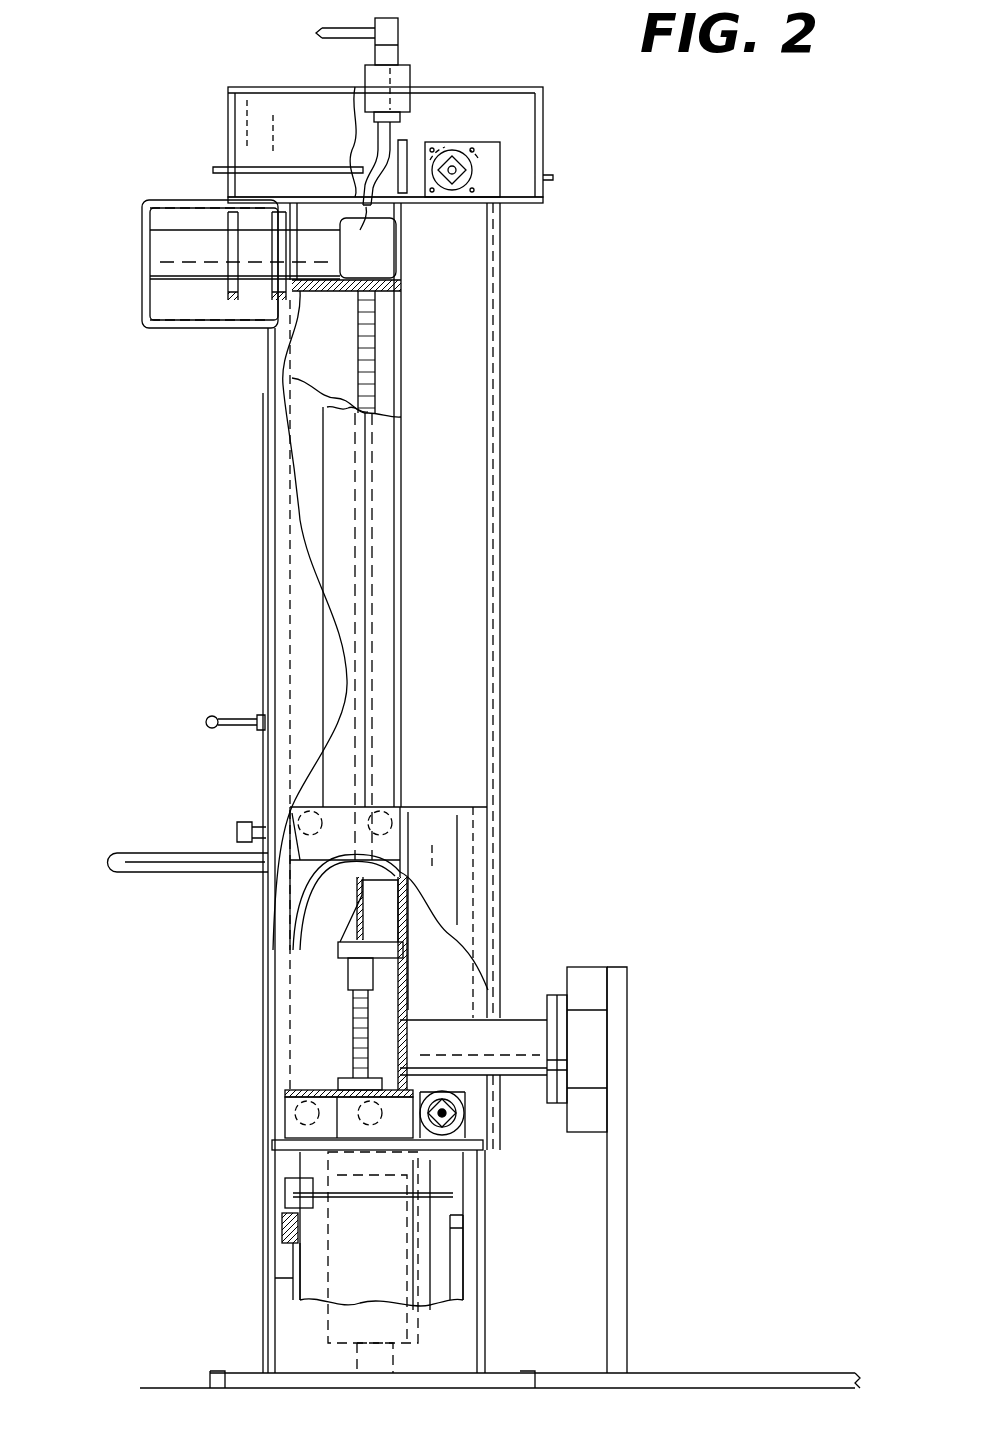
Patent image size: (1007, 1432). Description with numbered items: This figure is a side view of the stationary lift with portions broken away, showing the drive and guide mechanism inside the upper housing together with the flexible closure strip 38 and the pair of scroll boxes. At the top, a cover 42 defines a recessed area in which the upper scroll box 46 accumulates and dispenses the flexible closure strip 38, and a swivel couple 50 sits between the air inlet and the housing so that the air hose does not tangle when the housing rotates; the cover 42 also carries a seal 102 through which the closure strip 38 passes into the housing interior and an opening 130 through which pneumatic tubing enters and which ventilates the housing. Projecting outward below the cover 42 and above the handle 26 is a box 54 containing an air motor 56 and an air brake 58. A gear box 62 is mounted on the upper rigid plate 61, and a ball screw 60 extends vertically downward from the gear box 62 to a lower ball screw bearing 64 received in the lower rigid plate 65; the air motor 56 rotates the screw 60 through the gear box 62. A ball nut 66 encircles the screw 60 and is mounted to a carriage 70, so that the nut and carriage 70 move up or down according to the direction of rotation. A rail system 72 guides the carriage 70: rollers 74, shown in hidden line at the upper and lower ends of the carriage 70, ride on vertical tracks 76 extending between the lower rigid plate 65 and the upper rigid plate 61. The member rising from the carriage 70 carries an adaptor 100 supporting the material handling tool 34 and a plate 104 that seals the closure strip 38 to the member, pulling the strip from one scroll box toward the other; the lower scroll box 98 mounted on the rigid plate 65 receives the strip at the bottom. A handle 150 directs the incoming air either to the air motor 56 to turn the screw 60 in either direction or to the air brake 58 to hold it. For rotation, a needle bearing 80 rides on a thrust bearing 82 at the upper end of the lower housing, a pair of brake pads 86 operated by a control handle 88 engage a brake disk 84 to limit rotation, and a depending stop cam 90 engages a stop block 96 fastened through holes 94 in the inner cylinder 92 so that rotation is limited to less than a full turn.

The handle 26 is at (150, 867).
The material handling tool 34 is at (620, 1010).
The flexible closure strip 38 is at (495, 467).
The cover 42 is at (525, 205).
The upper scroll box 46 is at (497, 150).
The swivel couple 50 is at (408, 72).
The box 54 is at (152, 203).
The air motor 56 is at (155, 262).
The air brake 58 is at (253, 298).
The ball screw 60 is at (376, 363).
The upper rigid plate 61 is at (287, 366).
The gear box 62 is at (357, 230).
The lower ball screw bearing 64 is at (343, 1083).
The lower rigid plate 65 is at (300, 1100).
The ball nut 66 is at (345, 958).
The carriage 70 is at (468, 825).
The rail system 72 is at (297, 893).
The rollers 74 is at (293, 813).
The vertical tracks 76 is at (333, 505).
The needle bearing 80 is at (423, 1162).
The thrust bearing 82 is at (423, 1180).
The brake disk 84 is at (458, 1213).
The brake pads 86 is at (290, 1195).
The control handle 88 is at (237, 833).
The stop cam 90 is at (470, 1225).
The inner cylinder 92 is at (292, 1278).
The holes 94 is at (460, 1237).
The stop block 96 is at (283, 1230).
The lower scroll box 98 is at (470, 1110).
The adaptor 100 is at (560, 970).
The seal 102 is at (503, 200).
The plate 104 is at (508, 990).
The opening 130 is at (393, 207).
The handle 150 is at (206, 722).